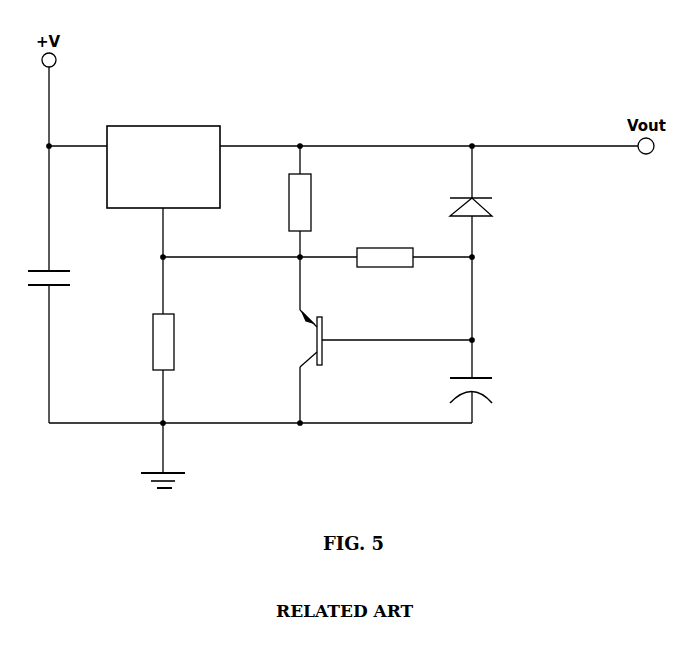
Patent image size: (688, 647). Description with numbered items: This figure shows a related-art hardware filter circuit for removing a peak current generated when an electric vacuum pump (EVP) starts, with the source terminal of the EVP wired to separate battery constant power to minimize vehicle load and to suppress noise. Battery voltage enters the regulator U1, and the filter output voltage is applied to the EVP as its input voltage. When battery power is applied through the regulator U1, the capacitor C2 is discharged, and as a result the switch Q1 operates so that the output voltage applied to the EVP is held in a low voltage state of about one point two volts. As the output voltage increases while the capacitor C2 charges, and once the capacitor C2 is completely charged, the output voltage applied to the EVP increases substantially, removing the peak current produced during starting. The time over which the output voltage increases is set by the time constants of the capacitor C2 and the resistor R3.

The regulator U1 is at (163, 155).
The resistor R3 is at (385, 246).
The switch Q1 is at (386, 366).
The capacitor C2 is at (485, 400).